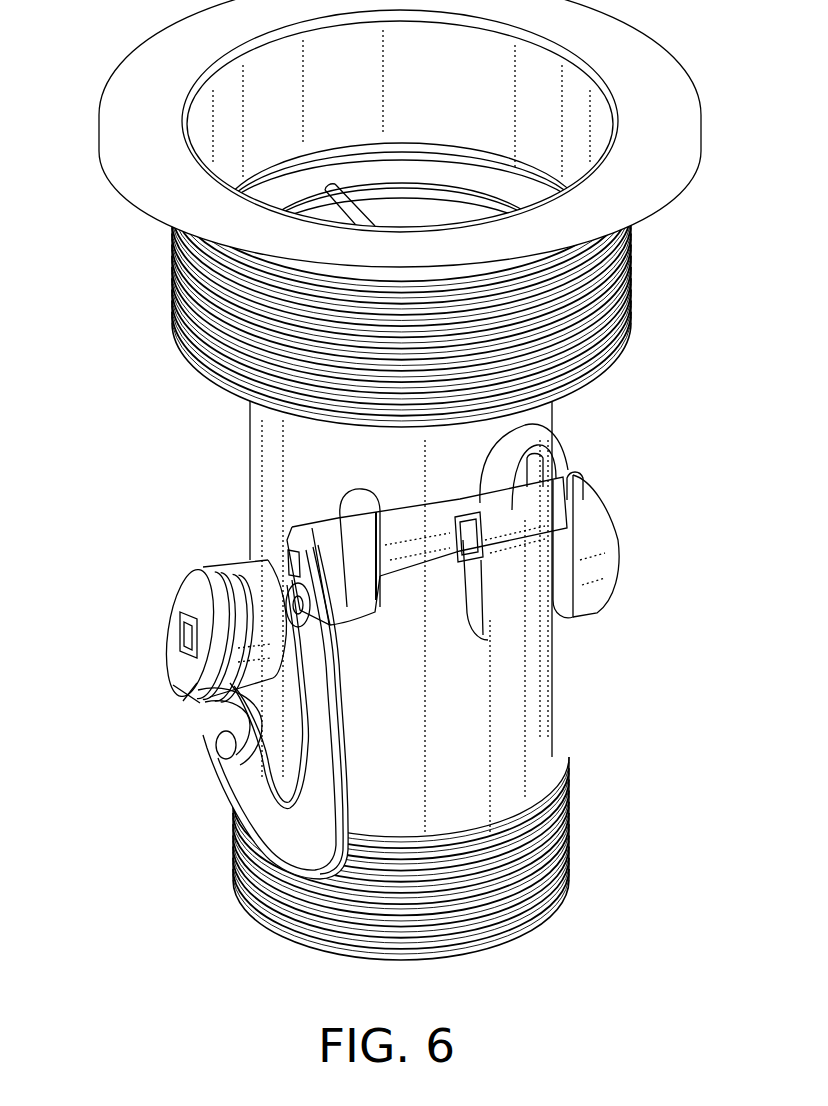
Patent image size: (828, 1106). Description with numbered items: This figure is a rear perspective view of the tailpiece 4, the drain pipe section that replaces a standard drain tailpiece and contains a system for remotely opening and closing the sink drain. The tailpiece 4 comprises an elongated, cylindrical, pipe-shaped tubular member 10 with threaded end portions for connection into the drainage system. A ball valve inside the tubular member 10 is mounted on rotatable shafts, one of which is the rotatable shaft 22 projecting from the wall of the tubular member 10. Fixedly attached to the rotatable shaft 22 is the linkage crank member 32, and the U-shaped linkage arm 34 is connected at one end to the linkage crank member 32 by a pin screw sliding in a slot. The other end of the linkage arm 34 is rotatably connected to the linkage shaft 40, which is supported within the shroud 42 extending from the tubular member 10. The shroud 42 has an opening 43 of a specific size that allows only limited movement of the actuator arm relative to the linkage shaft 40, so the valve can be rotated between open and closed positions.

The tailpiece drain pipe section 4 is at (238, 491).
The tubular member 10 is at (515, 710).
The rotatable shaft 22 is at (178, 635).
The linkage crank member 32 is at (183, 692).
The U-shaped linkage arm 34 is at (290, 842).
The linkage shaft 40 is at (470, 628).
The shroud 42 is at (540, 437).
The opening 43 is at (493, 438).